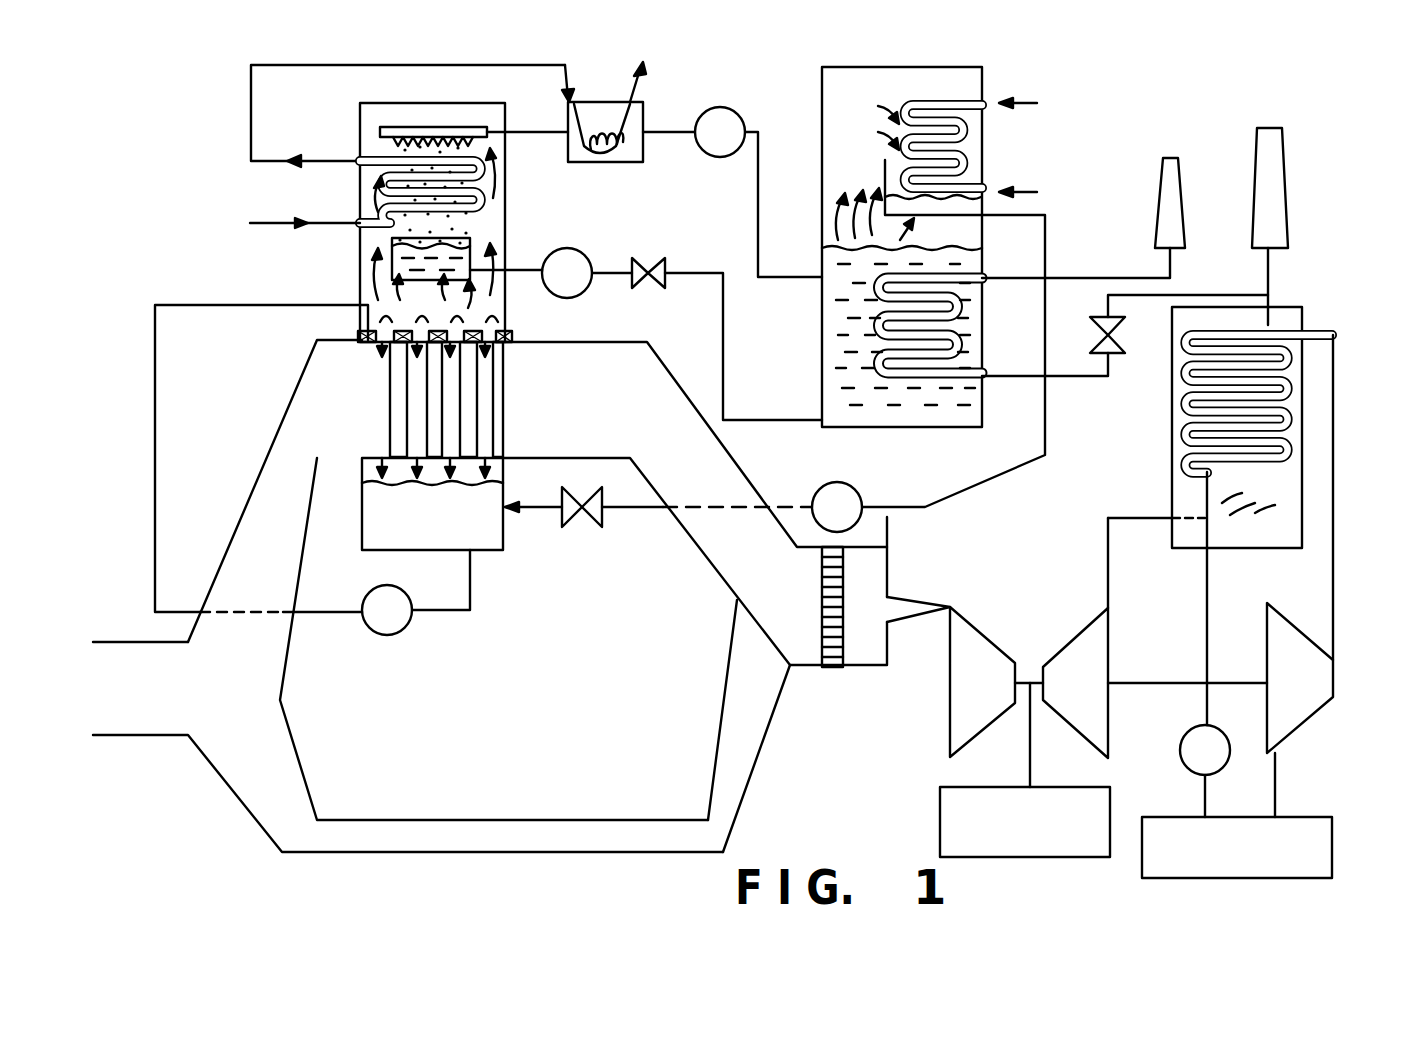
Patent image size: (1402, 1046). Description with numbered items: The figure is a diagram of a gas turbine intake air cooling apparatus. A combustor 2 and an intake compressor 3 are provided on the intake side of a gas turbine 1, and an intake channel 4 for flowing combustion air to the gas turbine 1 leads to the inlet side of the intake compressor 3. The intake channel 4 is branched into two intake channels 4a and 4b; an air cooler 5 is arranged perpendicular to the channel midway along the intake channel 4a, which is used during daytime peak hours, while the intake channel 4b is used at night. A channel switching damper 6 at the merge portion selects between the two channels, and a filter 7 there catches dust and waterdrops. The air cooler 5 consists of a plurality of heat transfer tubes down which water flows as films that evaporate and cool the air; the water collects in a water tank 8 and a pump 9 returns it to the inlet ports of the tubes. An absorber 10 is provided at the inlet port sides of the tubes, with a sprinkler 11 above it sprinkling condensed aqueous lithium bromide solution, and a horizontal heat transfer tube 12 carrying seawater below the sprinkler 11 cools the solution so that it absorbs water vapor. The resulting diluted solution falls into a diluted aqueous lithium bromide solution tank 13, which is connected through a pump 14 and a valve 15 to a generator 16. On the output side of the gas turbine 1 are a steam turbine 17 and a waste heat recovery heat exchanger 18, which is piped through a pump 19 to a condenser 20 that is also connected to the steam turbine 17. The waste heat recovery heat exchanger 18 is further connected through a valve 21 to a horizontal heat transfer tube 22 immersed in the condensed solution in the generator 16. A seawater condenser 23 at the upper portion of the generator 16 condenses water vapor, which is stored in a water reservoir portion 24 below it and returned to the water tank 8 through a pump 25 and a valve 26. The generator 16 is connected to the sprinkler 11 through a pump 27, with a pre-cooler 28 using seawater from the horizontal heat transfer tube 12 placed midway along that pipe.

The gas turbine 1 is at (1110, 737).
The combustor 2 is at (1112, 805).
The intake compressor 3 is at (950, 700).
The intake channel 4 is at (135, 735).
The intake channel 4a is at (297, 388).
The intake channel 4b is at (415, 820).
The air cooler 5 is at (503, 408).
The channel switching damper 6 is at (751, 630).
The filter 7 is at (826, 668).
The water tank 8 is at (490, 535).
The pump 9 is at (400, 628).
The absorber 10 is at (485, 175).
The sprinkler 11 is at (478, 127).
The horizontal heat transfer tube 12 is at (251, 120).
The diluted aqueous lithium bromide solution tank 13 is at (472, 255).
The pump 14 is at (558, 256).
The valve 15 is at (645, 259).
The generator 16 is at (822, 318).
The steam turbine 17 is at (1315, 737).
The waste heat recovery heat exchanger 18 is at (1287, 323).
The pump 19 is at (1225, 765).
The condenser 20 is at (1333, 826).
The valve 21 is at (1120, 340).
The horizontal heat transfer tube 22 is at (1093, 278).
The condenser 23 is at (955, 107).
The water reservoir portion 24 is at (963, 203).
The pump 25 is at (820, 486).
The valve 26 is at (598, 512).
The pump 27 is at (740, 113).
The pre-cooler 28 is at (632, 163).